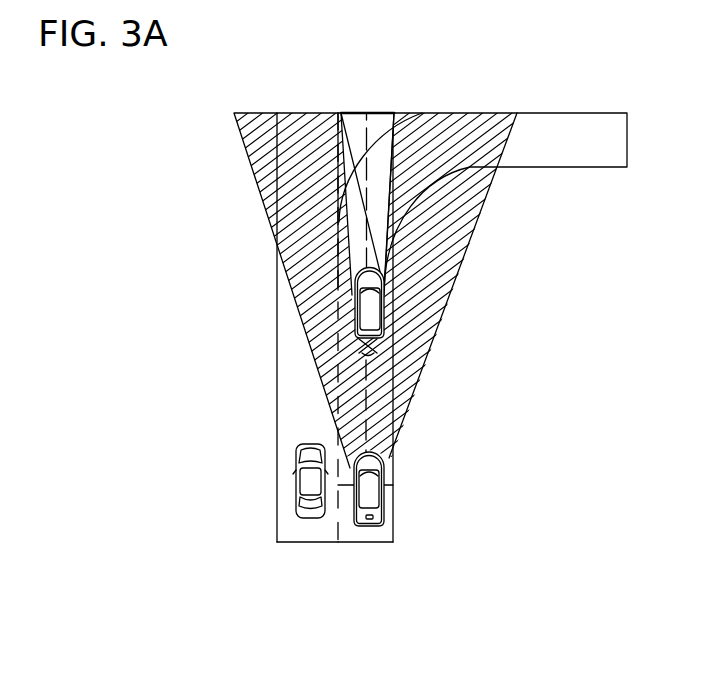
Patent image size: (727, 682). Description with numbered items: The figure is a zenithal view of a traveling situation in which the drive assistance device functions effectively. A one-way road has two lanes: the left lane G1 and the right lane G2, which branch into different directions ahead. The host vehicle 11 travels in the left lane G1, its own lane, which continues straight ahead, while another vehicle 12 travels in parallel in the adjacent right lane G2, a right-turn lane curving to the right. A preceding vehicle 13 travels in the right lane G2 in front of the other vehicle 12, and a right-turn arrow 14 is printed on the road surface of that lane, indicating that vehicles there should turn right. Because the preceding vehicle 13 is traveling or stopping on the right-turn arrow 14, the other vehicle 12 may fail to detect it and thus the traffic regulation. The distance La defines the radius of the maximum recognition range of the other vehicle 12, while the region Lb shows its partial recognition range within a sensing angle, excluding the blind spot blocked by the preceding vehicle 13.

The host vehicle 11 is at (306, 484).
The other vehicle 12 is at (372, 498).
The preceding vehicle 13 is at (372, 310).
The right-turn arrow 14 is at (375, 346).
The maximum recognition range distance La is at (362, 143).
The partial recognition range Lb is at (486, 198).
The left lane G1 is at (305, 546).
The right lane G2 is at (372, 546).